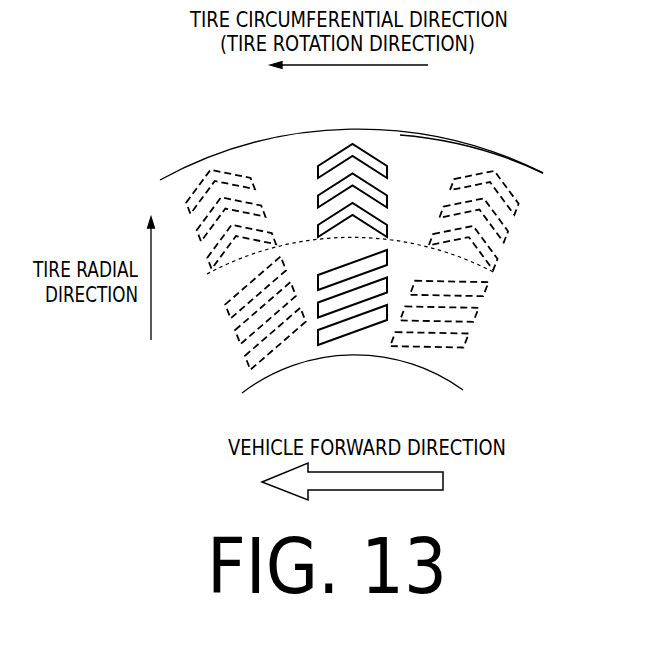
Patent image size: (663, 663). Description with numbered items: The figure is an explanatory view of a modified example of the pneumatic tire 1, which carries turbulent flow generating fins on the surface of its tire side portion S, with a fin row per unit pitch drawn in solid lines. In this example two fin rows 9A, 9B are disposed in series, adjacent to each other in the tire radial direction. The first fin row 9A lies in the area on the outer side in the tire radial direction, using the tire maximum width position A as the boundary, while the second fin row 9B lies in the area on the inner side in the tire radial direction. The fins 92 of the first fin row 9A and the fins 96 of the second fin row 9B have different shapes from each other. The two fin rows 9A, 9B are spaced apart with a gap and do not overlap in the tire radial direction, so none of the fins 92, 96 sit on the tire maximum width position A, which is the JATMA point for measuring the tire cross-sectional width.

The pneumatic tire 1 is at (507, 108).
The tire side portion S is at (458, 131).
The tire maximum width position A is at (342, 265).
The first fin row 9A is at (327, 162).
The second fin row 9B is at (336, 330).
The fins 92 is at (318, 171).
The fins 96 is at (320, 303).